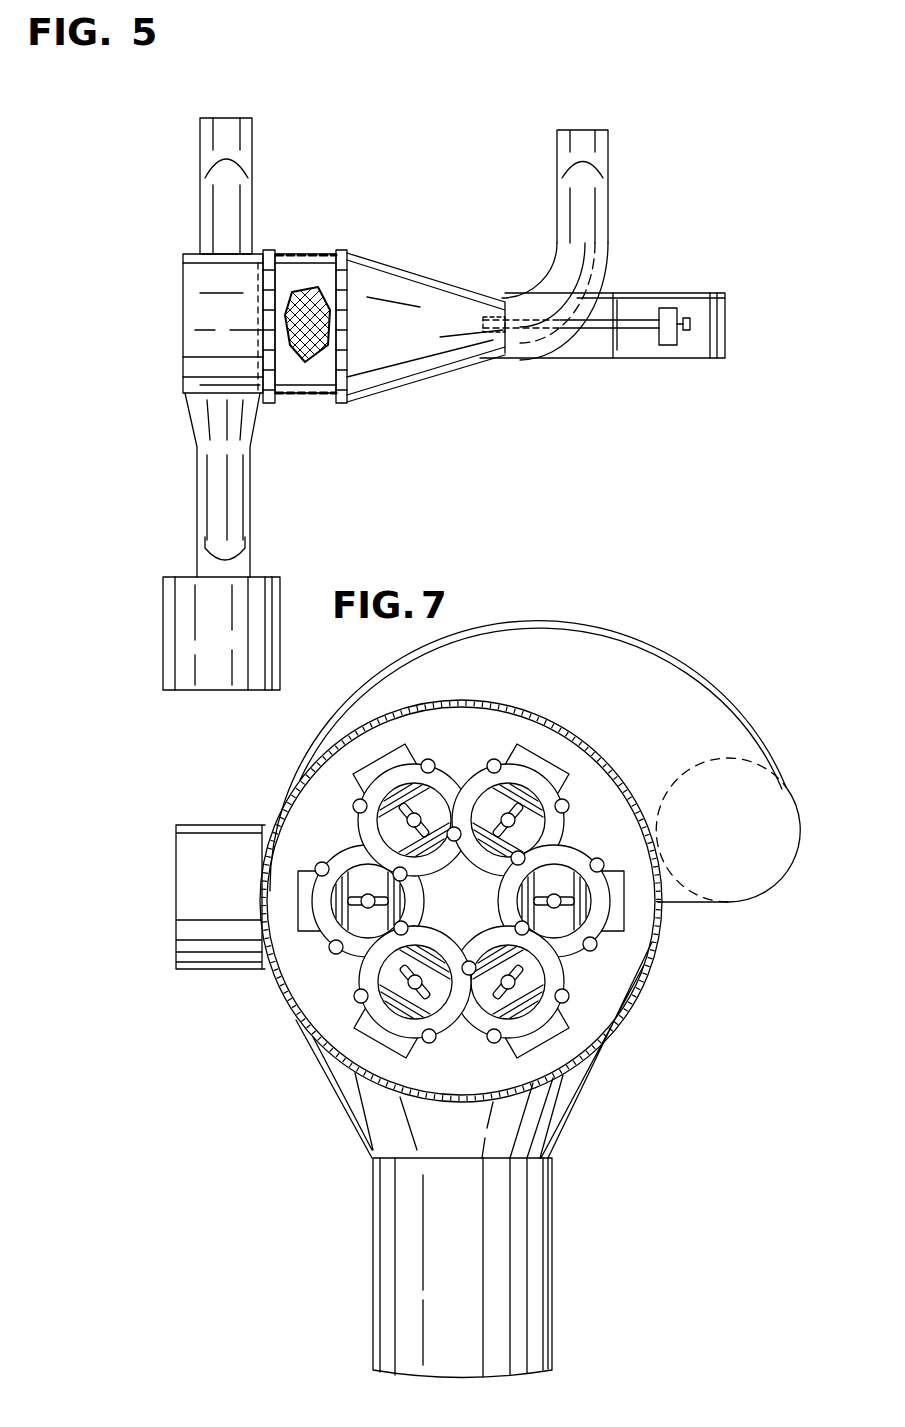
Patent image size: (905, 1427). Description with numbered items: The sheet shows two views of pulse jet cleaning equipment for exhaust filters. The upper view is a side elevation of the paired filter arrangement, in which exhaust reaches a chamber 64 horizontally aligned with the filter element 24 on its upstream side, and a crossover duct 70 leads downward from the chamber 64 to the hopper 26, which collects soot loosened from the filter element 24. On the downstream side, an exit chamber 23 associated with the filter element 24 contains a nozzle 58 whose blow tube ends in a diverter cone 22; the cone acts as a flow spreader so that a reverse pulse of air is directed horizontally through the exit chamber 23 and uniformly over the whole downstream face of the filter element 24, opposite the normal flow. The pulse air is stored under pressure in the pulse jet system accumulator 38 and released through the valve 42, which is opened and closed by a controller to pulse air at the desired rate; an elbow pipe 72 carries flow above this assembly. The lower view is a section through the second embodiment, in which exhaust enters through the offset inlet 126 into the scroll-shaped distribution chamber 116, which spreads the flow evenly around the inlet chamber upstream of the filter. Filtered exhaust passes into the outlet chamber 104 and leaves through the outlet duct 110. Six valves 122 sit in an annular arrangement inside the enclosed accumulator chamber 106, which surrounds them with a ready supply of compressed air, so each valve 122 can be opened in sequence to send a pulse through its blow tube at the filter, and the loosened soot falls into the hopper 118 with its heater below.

In FIG. 5, the diverter cone 22 is at (490, 317).
In FIG. 5, the exit chamber 23 is at (387, 280).
In FIG. 5, the filter element 24 is at (292, 266).
In FIG. 5, the hopper 26 is at (182, 583).
In FIG. 5, the pulse jet system accumulator 38 is at (698, 300).
In FIG. 5, the valve 42 is at (673, 337).
In FIG. 5, the nozzle 58 is at (507, 367).
In FIG. 5, the chamber 64 is at (195, 383).
In FIG. 5, the crossover duct 70 is at (237, 472).
In FIG. 5, the elbow pipe 72 is at (593, 215).
In FIG. 7, the outlet chamber 104 is at (657, 960).
In FIG. 7, the accumulator chamber 106 is at (538, 1072).
In FIG. 7, the outlet duct 110 is at (181, 932).
In FIG. 7, the scroll-shaped distribution chamber 116 is at (582, 633).
In FIG. 7, the hopper 118 is at (373, 1205).
In FIG. 7, the valve 122 is at (552, 942).
In FIG. 7, the inlet 126 is at (775, 878).